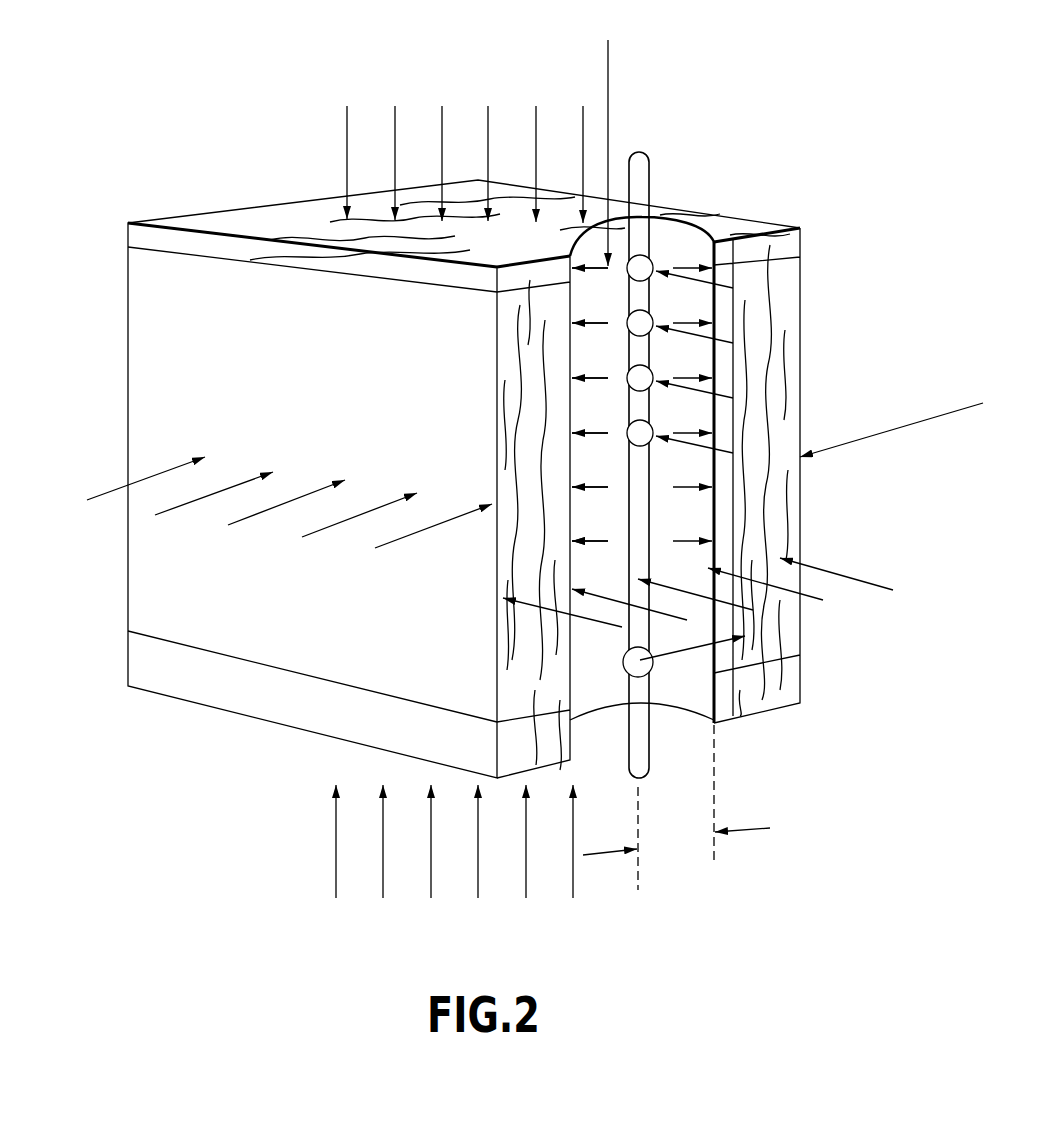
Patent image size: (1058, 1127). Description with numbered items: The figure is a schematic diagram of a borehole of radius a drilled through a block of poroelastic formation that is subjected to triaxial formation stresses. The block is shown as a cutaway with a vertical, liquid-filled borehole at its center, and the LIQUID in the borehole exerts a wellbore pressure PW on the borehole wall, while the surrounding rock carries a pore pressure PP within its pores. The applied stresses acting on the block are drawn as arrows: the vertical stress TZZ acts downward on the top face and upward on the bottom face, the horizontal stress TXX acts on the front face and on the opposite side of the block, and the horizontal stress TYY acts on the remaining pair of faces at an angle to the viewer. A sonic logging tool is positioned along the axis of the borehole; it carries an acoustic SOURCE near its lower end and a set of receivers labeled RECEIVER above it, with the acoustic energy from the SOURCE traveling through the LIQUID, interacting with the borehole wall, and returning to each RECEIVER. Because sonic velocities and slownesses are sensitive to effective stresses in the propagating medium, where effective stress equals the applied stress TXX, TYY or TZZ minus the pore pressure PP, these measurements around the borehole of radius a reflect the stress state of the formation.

The acoustic receivers on tool RECEIVER is at (650, 424).
The acoustic source SOURCE is at (655, 672).
The liquid-filled borehole/slot LIQUID is at (598, 688).
The borehole radius a is at (676, 807).
The wellbore pressure PW is at (621, 133).
The pore pressure PP is at (758, 331).
The triaxial stress Tzz TZZ is at (459, 509).
The triaxial stress Txx TXX is at (830, 416).
The triaxial stress Tyy TYY is at (128, 397).